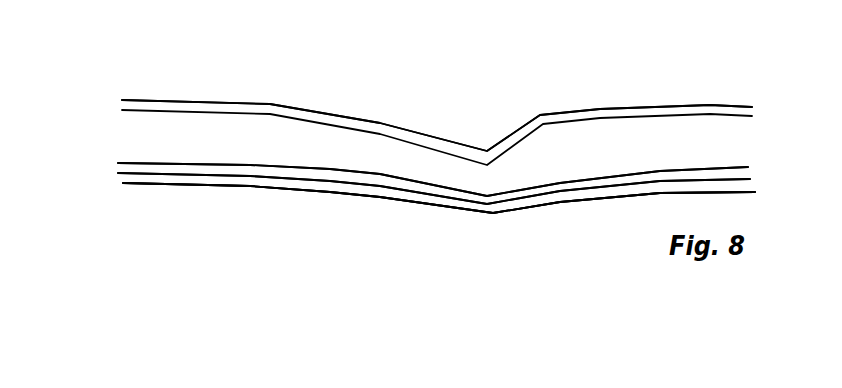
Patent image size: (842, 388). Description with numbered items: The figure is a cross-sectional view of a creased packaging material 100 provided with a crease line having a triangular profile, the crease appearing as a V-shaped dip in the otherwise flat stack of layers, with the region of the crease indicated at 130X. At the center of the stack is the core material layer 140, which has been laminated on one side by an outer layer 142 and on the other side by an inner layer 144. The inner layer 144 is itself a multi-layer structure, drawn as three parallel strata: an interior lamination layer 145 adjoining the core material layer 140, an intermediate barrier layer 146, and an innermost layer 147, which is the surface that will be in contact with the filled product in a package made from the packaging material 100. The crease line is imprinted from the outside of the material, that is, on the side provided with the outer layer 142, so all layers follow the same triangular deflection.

The packaging material 100 is at (587, 78).
The deformed region 130X is at (452, 77).
The outer layer 142 is at (260, 103).
The inner layer 144 is at (117, 162).
The interior lamination layer 145 is at (208, 172).
The core material layer 140 is at (282, 144).
The innermost layer 147 is at (390, 197).
The intermediate barrier layer 146 is at (475, 202).